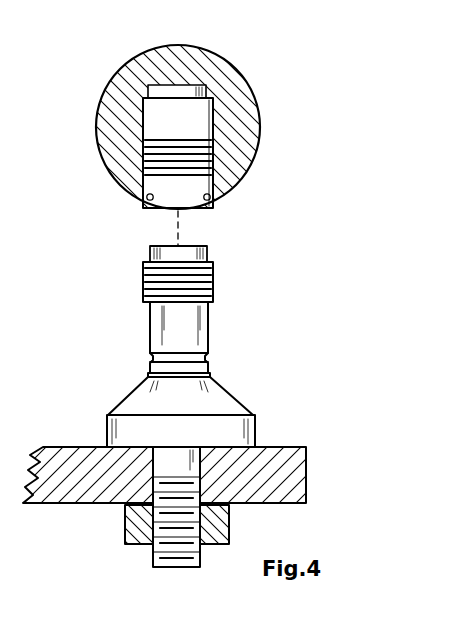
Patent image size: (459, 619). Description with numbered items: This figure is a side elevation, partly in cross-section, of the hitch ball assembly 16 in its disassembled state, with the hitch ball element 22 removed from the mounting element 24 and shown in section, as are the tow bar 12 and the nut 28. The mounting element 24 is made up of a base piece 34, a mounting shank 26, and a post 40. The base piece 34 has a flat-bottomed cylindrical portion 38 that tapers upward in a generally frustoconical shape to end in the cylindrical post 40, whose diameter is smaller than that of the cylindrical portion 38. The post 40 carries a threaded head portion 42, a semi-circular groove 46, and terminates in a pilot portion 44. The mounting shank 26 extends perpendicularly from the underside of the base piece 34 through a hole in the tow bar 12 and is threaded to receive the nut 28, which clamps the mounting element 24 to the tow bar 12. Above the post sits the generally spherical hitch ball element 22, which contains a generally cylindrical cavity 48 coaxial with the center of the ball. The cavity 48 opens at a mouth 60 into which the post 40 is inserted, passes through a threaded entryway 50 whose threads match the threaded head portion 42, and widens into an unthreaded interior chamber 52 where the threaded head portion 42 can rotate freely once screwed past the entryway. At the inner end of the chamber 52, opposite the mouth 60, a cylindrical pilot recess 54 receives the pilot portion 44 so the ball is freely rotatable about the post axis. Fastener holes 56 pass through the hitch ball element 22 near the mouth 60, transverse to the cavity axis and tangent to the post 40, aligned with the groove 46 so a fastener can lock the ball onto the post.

The tow bar 12 is at (82, 496).
The hitch ball assembly 16 is at (220, 137).
The hitch ball element 22 is at (240, 100).
The mounting element 24 is at (153, 304).
The mounting shank 26 is at (178, 526).
The nut 28 is at (232, 525).
The base piece 34 is at (217, 404).
The cylindrical portion 38 is at (255, 423).
The post 40 is at (212, 305).
The threaded head portion 42 is at (143, 274).
The pilot portion 44 is at (192, 253).
The groove 46 is at (197, 356).
The cavity 48 is at (216, 131).
The threaded entryway 50 is at (173, 177).
The interior chamber 52 is at (192, 130).
The pilot recess 54 is at (182, 84).
The fastener holes 56 is at (110, 167).
The mouth 60 is at (160, 223).